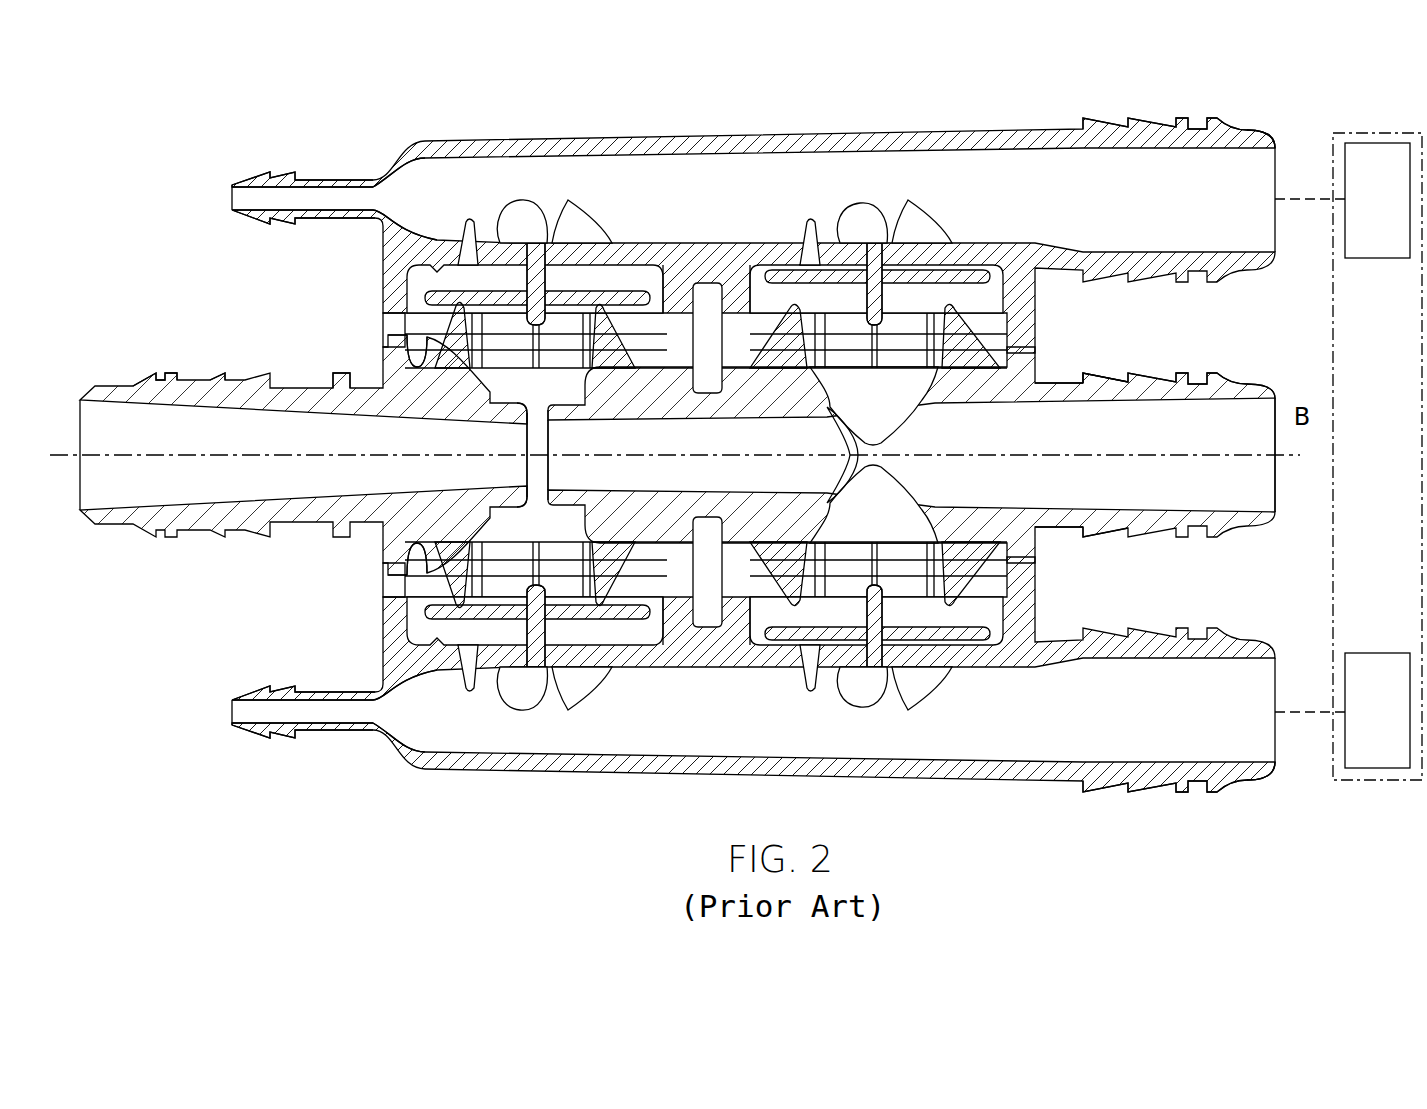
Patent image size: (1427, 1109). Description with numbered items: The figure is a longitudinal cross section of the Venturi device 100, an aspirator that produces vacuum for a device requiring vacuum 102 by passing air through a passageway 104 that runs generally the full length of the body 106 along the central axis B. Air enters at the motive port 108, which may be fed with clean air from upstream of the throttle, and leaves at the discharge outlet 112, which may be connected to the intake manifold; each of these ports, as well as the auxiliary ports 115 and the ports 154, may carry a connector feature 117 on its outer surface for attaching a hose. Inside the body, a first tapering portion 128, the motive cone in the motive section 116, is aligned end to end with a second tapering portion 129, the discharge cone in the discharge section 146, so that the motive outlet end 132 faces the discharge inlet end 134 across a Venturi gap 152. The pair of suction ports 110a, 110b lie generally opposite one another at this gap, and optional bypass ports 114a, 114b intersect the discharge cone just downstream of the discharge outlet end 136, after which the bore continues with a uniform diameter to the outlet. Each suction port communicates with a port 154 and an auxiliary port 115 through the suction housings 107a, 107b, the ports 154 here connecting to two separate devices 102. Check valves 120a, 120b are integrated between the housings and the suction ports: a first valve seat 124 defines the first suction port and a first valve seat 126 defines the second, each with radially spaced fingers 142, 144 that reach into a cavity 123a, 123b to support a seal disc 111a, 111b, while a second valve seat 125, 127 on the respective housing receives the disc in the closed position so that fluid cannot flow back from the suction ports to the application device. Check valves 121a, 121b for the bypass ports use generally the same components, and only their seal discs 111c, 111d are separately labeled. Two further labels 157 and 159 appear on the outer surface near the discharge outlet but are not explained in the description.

The Venturi device 100 is at (944, 102).
The device requiring vacuum 102 is at (1348, 456).
The passageway 104 is at (342, 449).
The body 106 is at (293, 388).
The suction housing 107a is at (765, 135).
The suction housing 107b is at (765, 780).
The motive port 108 is at (82, 492).
The first suction port 110a is at (440, 352).
The second suction port 110b is at (565, 498).
The seal disc 111a is at (468, 298).
The seal disc 111b is at (470, 612).
The seal disc 111c is at (962, 277).
The seal disc 111d is at (962, 633).
The discharge outlet 112 is at (1278, 495).
The bypass port 114a is at (893, 383).
The bypass port 114b is at (893, 528).
The auxiliary port 115 is at (255, 176).
The motive section 116 is at (218, 380).
The connector feature 117 is at (1143, 118).
The check valve 120a is at (753, 218).
The check valve 120b is at (753, 693).
The check valve 121a is at (1018, 313).
The check valve 121b is at (1018, 597).
The cavity 123a is at (658, 265).
The cavity 123b is at (658, 645).
The first valve seat 124 is at (432, 395).
The second valve seat 125 is at (428, 248).
The first valve seat 126 is at (460, 527).
The second valve seat 127 is at (437, 665).
The first tapering portion 128 is at (145, 398).
The second tapering portion 129 is at (913, 455).
The motive outlet end 132 is at (520, 438).
The discharge inlet end 134 is at (552, 437).
The discharge outlet end 136 is at (835, 447).
The radially spaced fingers 142 is at (596, 330).
The radially spaced fingers 144 is at (598, 580).
The discharge section 146 is at (655, 495).
The Venturi gap 152 is at (520, 476).
The port 154 is at (1278, 163).
The barb 157 is at (1113, 395).
The barb 159 is at (1143, 520).